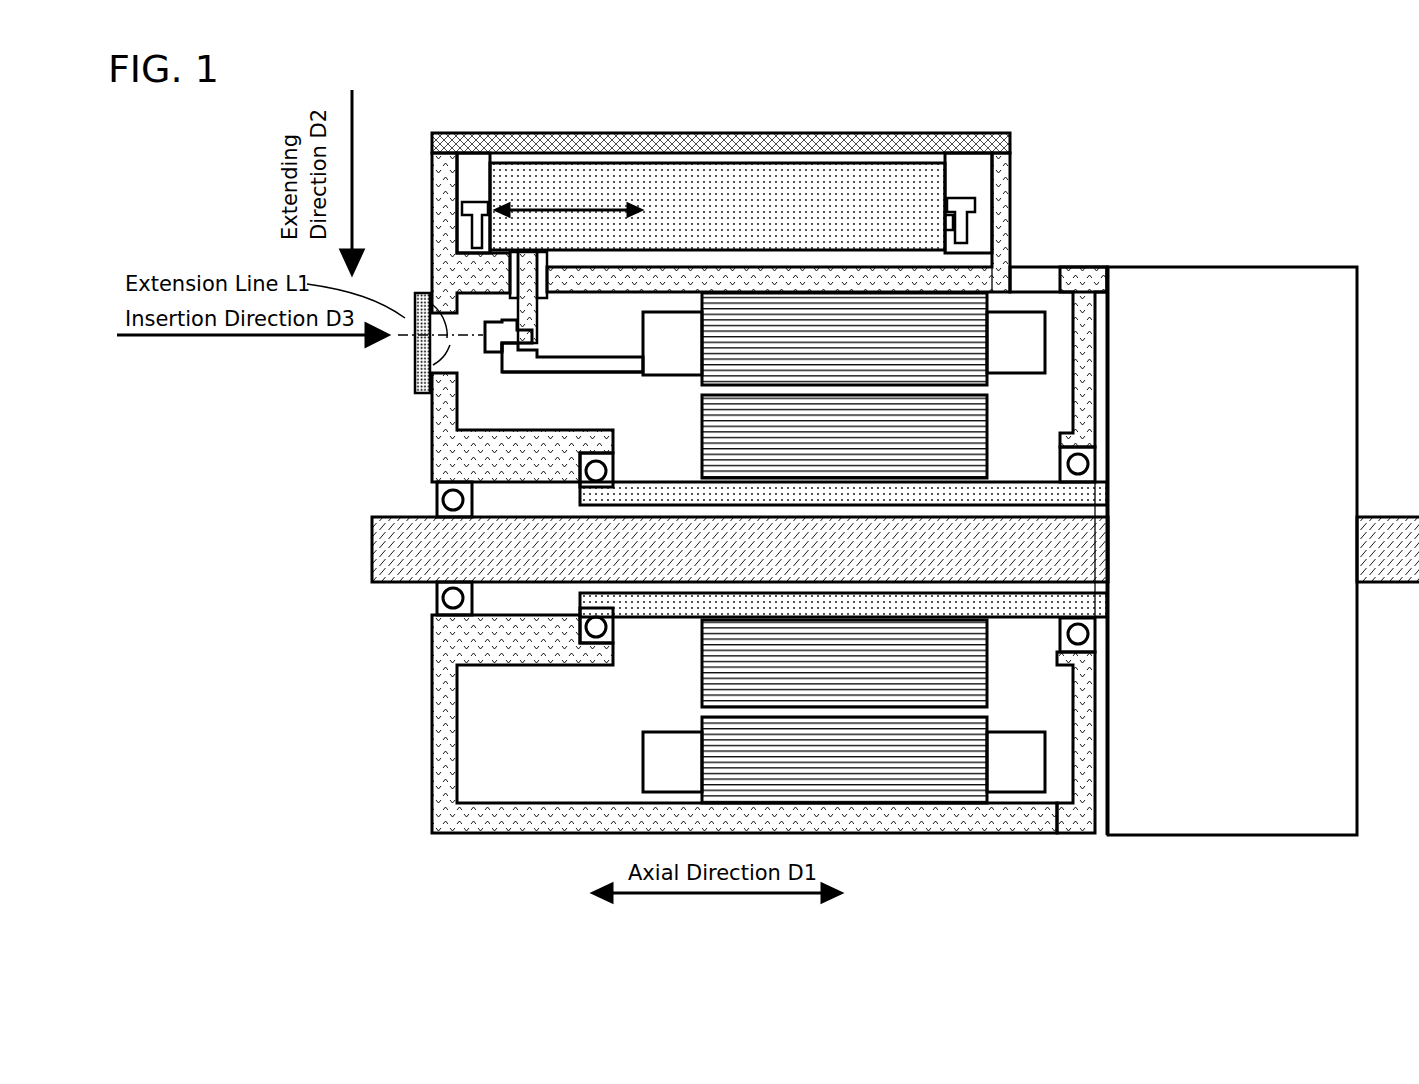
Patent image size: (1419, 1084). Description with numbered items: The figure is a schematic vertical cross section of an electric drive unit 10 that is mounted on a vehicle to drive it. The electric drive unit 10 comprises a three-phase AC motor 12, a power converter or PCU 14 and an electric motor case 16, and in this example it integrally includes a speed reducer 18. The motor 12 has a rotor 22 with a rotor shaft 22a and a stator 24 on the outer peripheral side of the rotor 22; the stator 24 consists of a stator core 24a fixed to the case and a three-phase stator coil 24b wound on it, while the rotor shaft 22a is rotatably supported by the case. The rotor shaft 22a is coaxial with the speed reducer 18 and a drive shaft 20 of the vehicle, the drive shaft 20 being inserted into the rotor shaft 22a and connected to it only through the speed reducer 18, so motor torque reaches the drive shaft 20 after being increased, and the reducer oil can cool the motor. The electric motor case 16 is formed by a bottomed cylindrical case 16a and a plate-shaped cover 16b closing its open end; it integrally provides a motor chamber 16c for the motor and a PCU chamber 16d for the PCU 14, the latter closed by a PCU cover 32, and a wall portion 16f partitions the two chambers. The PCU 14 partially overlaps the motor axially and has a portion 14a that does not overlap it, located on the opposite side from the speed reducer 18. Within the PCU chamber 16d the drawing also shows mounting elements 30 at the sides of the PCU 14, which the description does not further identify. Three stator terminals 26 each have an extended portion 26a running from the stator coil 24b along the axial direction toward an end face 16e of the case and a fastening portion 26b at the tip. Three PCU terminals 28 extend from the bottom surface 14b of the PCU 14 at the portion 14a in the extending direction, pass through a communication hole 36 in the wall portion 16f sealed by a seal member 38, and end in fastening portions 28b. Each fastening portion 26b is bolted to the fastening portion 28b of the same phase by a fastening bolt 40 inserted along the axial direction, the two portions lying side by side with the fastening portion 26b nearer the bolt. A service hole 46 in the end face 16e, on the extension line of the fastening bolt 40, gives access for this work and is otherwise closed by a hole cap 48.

The electric drive unit 10 is at (1271, 104).
The three-phase AC motor 12 is at (1014, 421).
The power converter (PCU) 14 is at (956, 162).
The portion of the PCU not overlapping the motor 14a is at (560, 203).
The bottom surface of the PCU 14b is at (667, 265).
The electric motor case 16 is at (1048, 898).
The cylindrical case 16a is at (915, 846).
The cover 16b is at (1085, 822).
The motor chamber 16c is at (1040, 698).
The PCU chamber 16d is at (972, 165).
The end face of the electric motor case 16e is at (437, 178).
The wall portion (partition wall) 16f is at (842, 278).
The speed reducer 18 is at (1270, 265).
The drive shaft 20 is at (418, 555).
The rotor 22 is at (667, 607).
The rotor shaft 22a is at (680, 673).
The stator 24 is at (1040, 205).
The stator core 24a is at (925, 335).
The stator coil 24b is at (1010, 335).
The stator terminal 26 is at (345, 432).
The extended portion of the stator terminal 26a is at (545, 373).
The fastening portion of the stator terminal 26b is at (495, 360).
The PCU terminal 28 is at (547, 312).
The fastening portion of the PCU terminal 28b is at (537, 325).
The connector 30 is at (477, 202).
The PCU cover 32 is at (745, 133).
The communication hole 36 is at (520, 297).
The seal member 38 is at (515, 270).
The fastening bolt 40 is at (490, 350).
The service hole 46 is at (443, 352).
The hole cap 48 is at (430, 327).